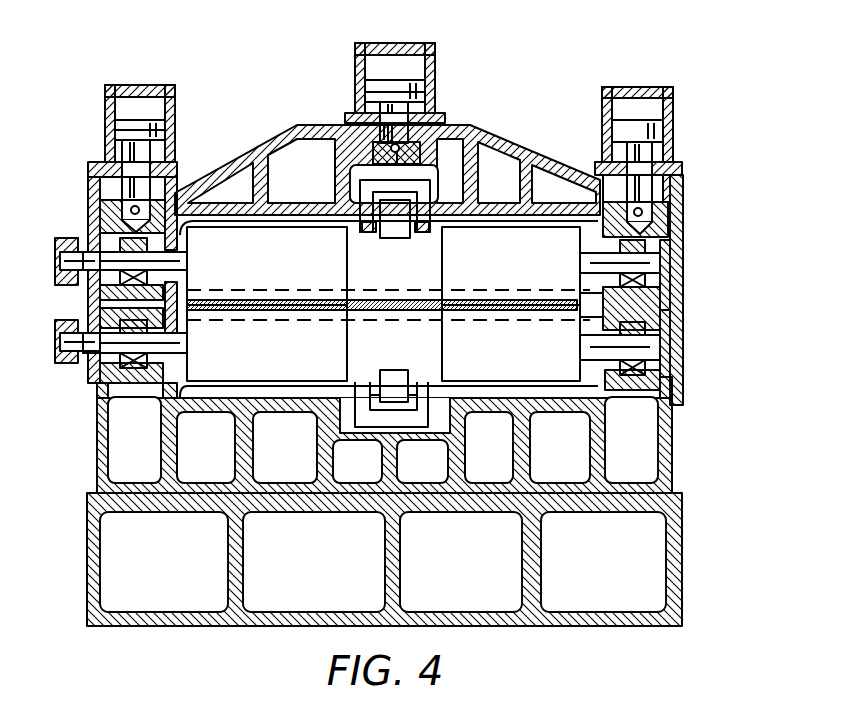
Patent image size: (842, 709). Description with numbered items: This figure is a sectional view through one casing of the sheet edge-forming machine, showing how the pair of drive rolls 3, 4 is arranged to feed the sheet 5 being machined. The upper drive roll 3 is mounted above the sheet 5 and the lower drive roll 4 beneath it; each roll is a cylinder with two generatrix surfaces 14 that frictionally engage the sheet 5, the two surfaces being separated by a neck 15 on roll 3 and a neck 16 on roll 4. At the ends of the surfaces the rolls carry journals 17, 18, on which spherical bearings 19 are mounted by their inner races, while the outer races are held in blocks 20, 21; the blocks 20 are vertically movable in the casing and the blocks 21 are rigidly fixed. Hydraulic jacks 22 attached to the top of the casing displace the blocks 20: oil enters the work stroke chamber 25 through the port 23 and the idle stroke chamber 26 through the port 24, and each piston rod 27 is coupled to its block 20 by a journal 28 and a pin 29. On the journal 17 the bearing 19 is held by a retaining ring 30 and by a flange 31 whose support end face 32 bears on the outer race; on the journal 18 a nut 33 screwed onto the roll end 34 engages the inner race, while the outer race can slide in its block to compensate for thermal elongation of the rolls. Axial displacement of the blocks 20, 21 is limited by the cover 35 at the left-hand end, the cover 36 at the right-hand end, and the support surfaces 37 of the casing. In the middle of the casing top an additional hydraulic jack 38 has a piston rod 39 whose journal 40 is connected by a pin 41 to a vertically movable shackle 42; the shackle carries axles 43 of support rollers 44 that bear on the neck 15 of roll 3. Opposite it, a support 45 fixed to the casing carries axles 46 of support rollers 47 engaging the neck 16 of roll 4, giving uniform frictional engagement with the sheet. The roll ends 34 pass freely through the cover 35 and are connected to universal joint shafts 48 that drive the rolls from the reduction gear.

The drive roll 3 is at (285, 232).
The drive roll 4 is at (278, 387).
The sheet 5 is at (246, 302).
The generatrix surface 14 is at (248, 218).
The neck 15 is at (444, 283).
The neck 16 is at (445, 356).
The journal 17 is at (600, 262).
The journal 18 is at (168, 268).
The spherical bearing 19 is at (676, 300).
The block 20 is at (90, 228).
The block 21 is at (102, 378).
The hydraulic jack 22 is at (110, 132).
The port 23 is at (178, 98).
The port 24 is at (178, 162).
The work stroke chamber 25 is at (138, 108).
The idle stroke chamber 26 is at (118, 160).
The piston rod 27 is at (103, 183).
The journal 28 is at (134, 208).
The pin 29 is at (128, 216).
The retaining ring 30 is at (672, 270).
The flange 31 is at (668, 342).
The support end face 32 is at (604, 300).
The nut 33 is at (102, 300).
The end 34 is at (63, 265).
The cover 35 is at (100, 396).
The cover 36 is at (672, 372).
The support surface 37 is at (168, 388).
The additional hydraulic jack 38 is at (436, 95).
The piston rod 39 is at (380, 124).
The journal 40 is at (372, 151).
The pin 41 is at (421, 151).
The shackle 42 is at (432, 232).
The axle 43 is at (374, 234).
The support roller 44 is at (400, 238).
The support 45 is at (412, 428).
The axle 46 is at (376, 384).
The support roller 47 is at (410, 383).
The universal joint shaft 48 is at (62, 246).